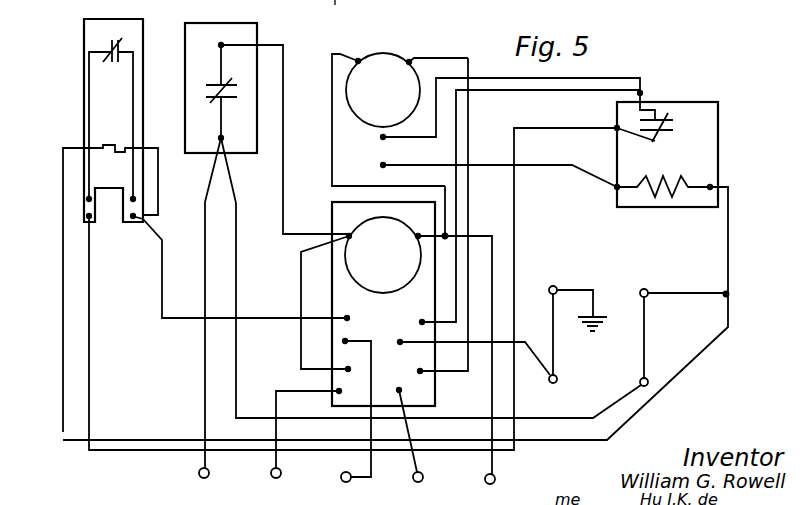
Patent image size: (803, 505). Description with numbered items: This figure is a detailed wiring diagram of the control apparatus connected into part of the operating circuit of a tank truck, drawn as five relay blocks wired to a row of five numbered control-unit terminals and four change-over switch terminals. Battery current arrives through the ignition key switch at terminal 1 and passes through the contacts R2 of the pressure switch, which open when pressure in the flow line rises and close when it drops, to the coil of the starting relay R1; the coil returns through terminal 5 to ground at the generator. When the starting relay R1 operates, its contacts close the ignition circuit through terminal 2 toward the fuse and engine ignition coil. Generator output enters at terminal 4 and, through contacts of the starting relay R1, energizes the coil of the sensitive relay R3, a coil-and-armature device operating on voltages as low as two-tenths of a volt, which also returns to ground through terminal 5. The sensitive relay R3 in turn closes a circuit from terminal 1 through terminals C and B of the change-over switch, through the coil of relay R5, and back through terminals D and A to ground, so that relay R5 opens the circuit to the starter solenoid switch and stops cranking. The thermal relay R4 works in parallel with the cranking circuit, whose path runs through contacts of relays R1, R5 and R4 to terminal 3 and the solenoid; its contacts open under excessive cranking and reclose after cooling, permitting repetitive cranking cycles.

The R1 relay R1 is at (383, 304).
The contacts R2 is at (221, 88).
The sensitive relay R3 is at (400, 119).
The thermal relay R4 is at (110, 225).
The R5 relay R5 is at (667, 149).
The terminal A is at (578, 322).
The terminal B is at (684, 326).
The terminal C is at (651, 377).
The terminal D is at (563, 378).
The terminal 1 is at (204, 486).
The terminal 2 is at (275, 486).
The terminal 3 is at (345, 488).
The terminal 4 is at (417, 488).
The terminal 5 is at (489, 489).